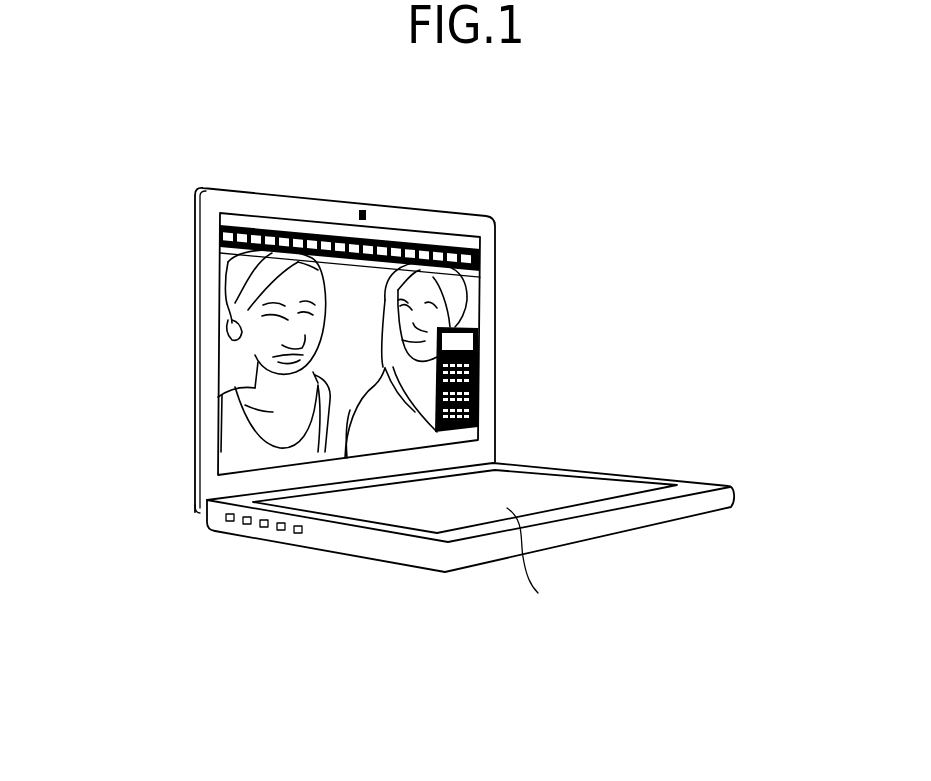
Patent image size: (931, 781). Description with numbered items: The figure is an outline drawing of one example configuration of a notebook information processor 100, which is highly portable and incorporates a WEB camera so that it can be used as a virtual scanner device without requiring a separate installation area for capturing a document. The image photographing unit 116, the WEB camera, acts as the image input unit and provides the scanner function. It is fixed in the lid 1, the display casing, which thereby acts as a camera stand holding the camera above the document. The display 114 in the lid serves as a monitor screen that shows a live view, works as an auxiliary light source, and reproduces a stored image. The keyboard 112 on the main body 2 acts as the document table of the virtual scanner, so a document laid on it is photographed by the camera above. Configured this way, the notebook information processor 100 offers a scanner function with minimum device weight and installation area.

The notebook information processor 100 is at (191, 559).
The lid 1 is at (492, 275).
The main body 2 is at (385, 547).
The keyboard 112 is at (690, 487).
The display 114 is at (422, 374).
The image photographing unit 116 is at (363, 211).